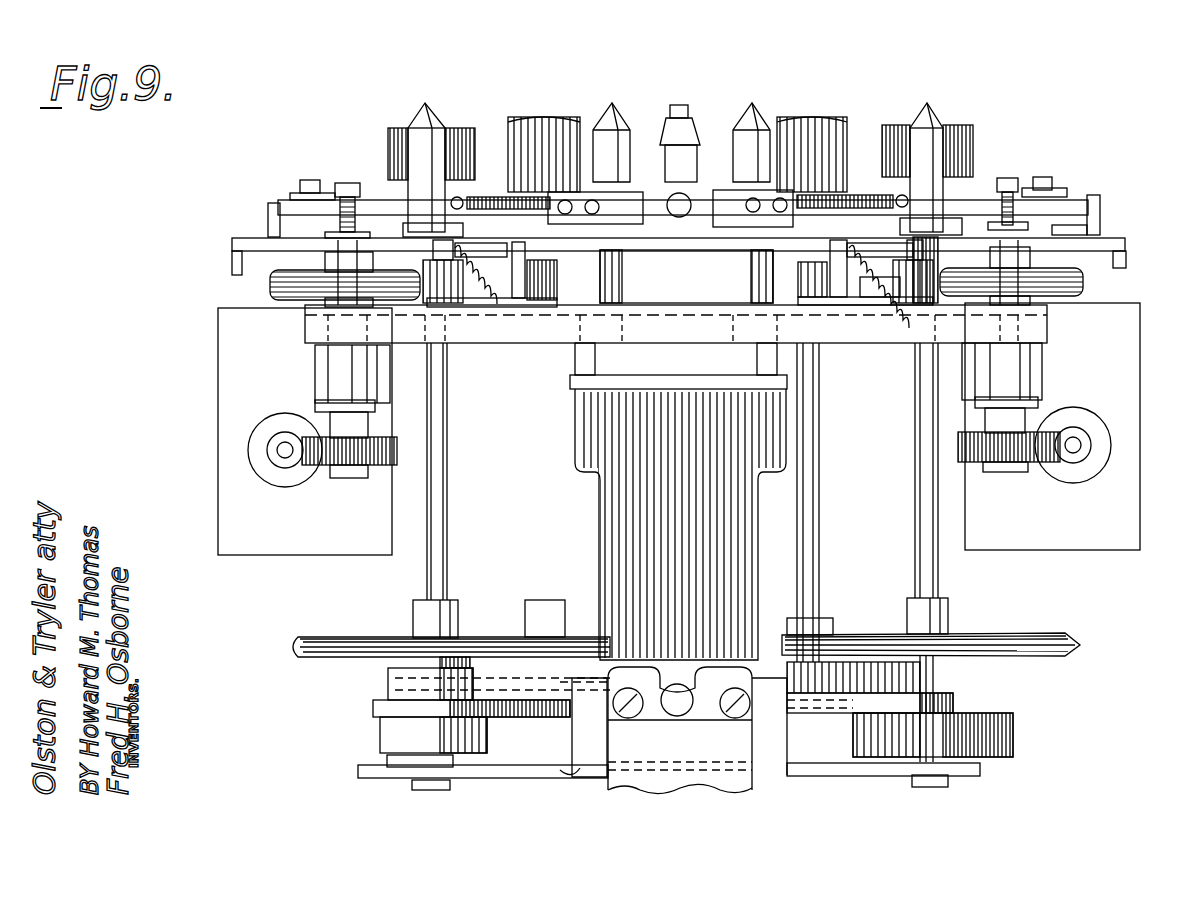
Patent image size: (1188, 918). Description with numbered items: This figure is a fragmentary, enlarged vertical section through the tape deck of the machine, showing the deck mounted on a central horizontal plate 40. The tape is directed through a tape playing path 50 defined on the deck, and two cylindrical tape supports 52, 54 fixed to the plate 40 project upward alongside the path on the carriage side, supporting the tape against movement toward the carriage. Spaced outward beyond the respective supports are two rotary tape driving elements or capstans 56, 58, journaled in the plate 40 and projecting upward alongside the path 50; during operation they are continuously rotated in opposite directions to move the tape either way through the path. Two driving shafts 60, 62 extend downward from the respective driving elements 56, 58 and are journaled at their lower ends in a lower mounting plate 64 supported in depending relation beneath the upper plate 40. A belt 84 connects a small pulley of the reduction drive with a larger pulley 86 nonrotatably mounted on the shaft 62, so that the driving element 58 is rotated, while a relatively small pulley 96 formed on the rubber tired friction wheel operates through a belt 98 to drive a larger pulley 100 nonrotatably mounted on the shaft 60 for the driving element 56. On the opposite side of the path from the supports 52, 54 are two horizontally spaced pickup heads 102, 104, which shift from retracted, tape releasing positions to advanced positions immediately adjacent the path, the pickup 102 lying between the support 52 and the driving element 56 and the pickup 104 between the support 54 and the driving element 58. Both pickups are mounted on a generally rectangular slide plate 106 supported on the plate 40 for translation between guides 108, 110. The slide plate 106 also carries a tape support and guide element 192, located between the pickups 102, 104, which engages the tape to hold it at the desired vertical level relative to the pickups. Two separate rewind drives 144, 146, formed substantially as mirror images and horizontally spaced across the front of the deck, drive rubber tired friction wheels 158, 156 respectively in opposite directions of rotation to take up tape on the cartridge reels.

The central horizontal plate 40 is at (246, 240).
The tape playing path 50 is at (716, 132).
The tape support 52 is at (620, 120).
The tape support 54 is at (762, 140).
The tape driving element 56 is at (407, 146).
The tape driving element 58 is at (930, 138).
The driving shaft 60 is at (426, 573).
The driving shaft 62 is at (938, 573).
The lower mounting plate 64 is at (985, 771).
The belt 84 is at (1082, 643).
The pulley 86 is at (1008, 636).
The pulley 96 is at (580, 636).
The belt 98 is at (292, 647).
The pulley 100 is at (335, 638).
The pickup head 102 is at (548, 160).
The pickup head 104 is at (825, 130).
The slide plate 106 is at (305, 172).
The guide 108 is at (266, 207).
The guide 110 is at (1097, 205).
The rewind drive 144 is at (215, 421).
The rewind drive 146 is at (1100, 496).
The rubber tired friction wheel 156 is at (1085, 288).
The rubber tired friction drive wheel 158 is at (270, 287).
The tape support and guide element 192 is at (688, 150).